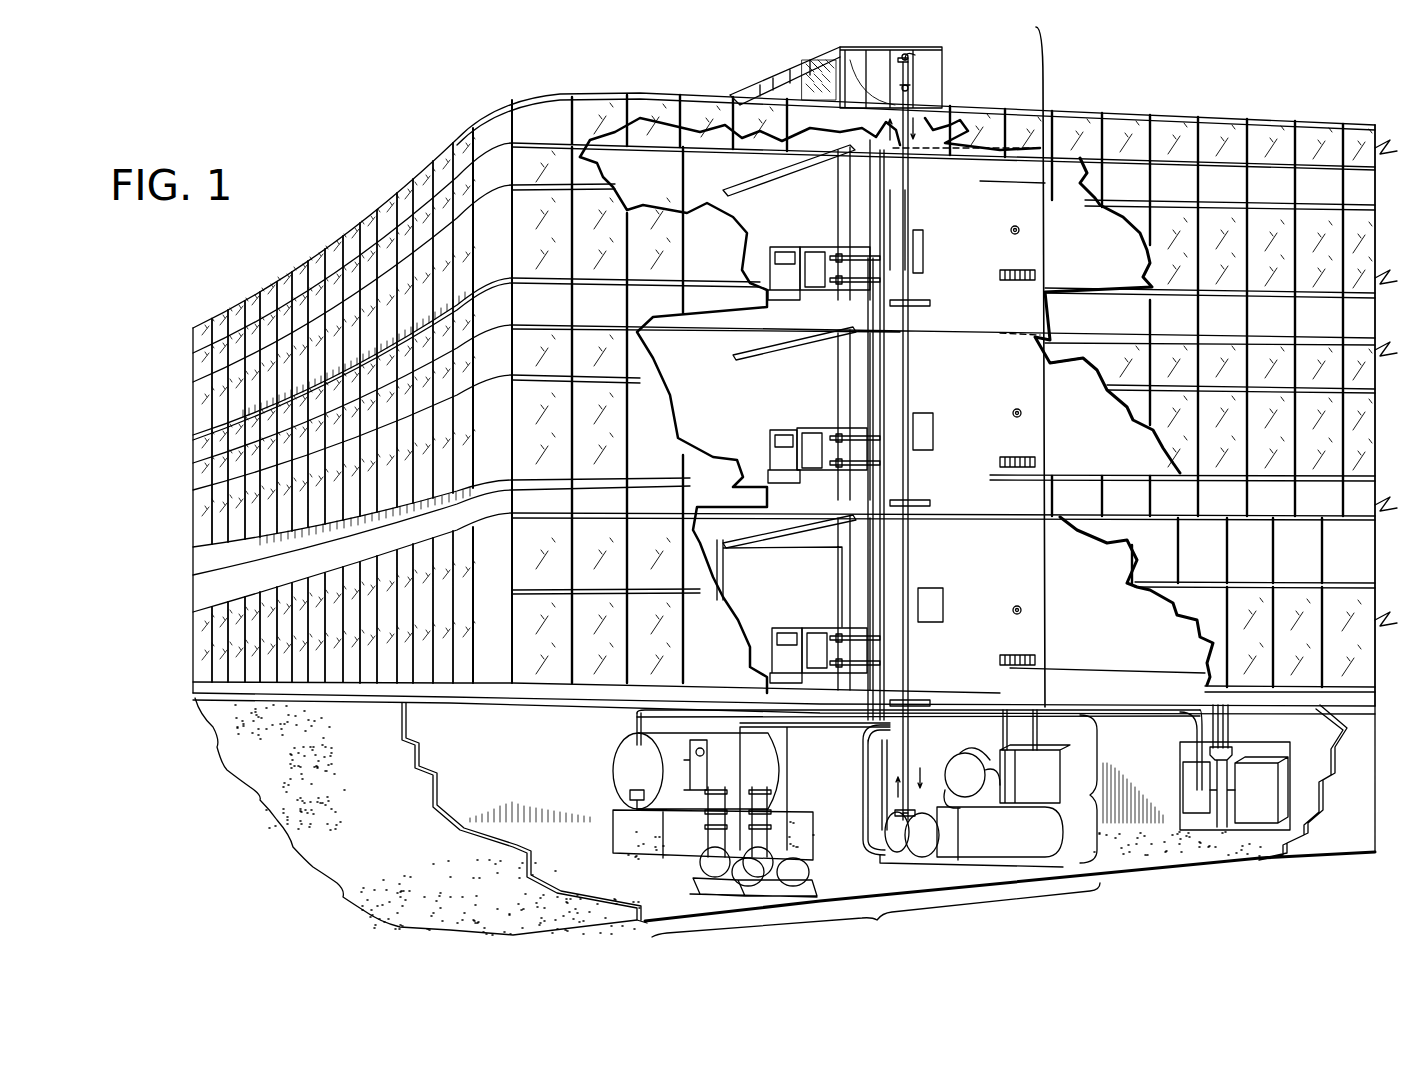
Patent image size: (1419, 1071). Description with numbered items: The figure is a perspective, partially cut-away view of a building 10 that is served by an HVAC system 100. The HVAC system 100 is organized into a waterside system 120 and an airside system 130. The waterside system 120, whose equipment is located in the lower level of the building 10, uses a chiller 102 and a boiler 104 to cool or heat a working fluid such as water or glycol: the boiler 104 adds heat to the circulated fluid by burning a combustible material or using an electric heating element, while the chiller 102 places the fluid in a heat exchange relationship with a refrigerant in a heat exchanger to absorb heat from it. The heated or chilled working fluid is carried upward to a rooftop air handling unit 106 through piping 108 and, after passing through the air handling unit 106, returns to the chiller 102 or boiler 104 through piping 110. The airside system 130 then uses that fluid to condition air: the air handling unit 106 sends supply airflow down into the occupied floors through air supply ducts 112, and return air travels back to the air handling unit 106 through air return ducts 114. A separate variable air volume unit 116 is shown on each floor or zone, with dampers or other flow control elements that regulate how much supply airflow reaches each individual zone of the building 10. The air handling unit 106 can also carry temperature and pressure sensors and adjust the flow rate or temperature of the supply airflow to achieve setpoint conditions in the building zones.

The building 10 is at (347, 149).
The HVAC system 100 is at (876, 918).
The chiller 102 is at (993, 838).
The boiler 104 is at (628, 765).
The rooftop air handling unit (AHU) 106 is at (935, 97).
The piping 108 is at (836, 56).
The piping 110 is at (913, 70).
The air supply ducts 112 is at (865, 172).
The air return ducts 114 is at (773, 292).
The variable air volume (VAV) units 116 is at (822, 257).
The waterside system 120 is at (1100, 790).
The airside system 130 is at (1055, 372).